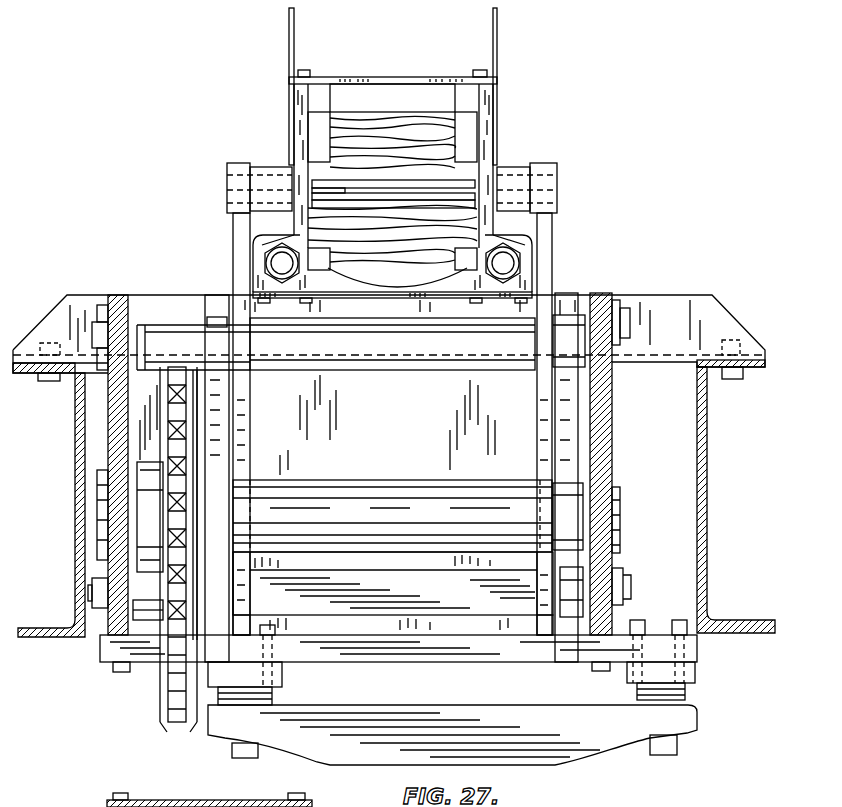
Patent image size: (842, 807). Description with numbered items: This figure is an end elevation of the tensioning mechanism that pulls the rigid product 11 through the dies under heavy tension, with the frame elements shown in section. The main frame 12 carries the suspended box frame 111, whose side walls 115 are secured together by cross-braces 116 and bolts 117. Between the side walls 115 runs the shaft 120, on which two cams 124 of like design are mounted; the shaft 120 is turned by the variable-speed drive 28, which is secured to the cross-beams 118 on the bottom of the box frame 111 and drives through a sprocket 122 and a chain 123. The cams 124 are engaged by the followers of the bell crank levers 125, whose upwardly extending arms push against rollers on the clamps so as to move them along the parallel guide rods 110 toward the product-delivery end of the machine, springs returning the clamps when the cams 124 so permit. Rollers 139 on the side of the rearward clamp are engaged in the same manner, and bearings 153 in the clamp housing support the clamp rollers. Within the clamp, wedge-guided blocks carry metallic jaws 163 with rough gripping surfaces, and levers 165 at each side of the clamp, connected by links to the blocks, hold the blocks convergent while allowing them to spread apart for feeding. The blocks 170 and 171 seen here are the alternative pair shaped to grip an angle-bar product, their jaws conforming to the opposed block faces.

The rigid product 11 is at (400, 190).
The frame 12 is at (708, 470).
The variable-speed drive 28 is at (700, 716).
The guide rods 110 is at (523, 257).
The box frame 111 is at (636, 456).
The side walls 115 is at (108, 416).
The cross-braces 116 is at (415, 582).
The bolts 117 is at (632, 583).
The cross-beams 118 is at (698, 652).
The shaft 120 is at (398, 487).
The sprocket 122 is at (160, 668).
The chain 123 is at (170, 700).
The cams 124 is at (222, 425).
The bell crank levers 125 is at (247, 448).
The rollers 139 is at (557, 190).
The bearings 153 is at (510, 165).
The metallic jaws 163 is at (432, 200).
The levers 165 is at (497, 30).
The block 170 is at (414, 125).
The block 171 is at (412, 262).